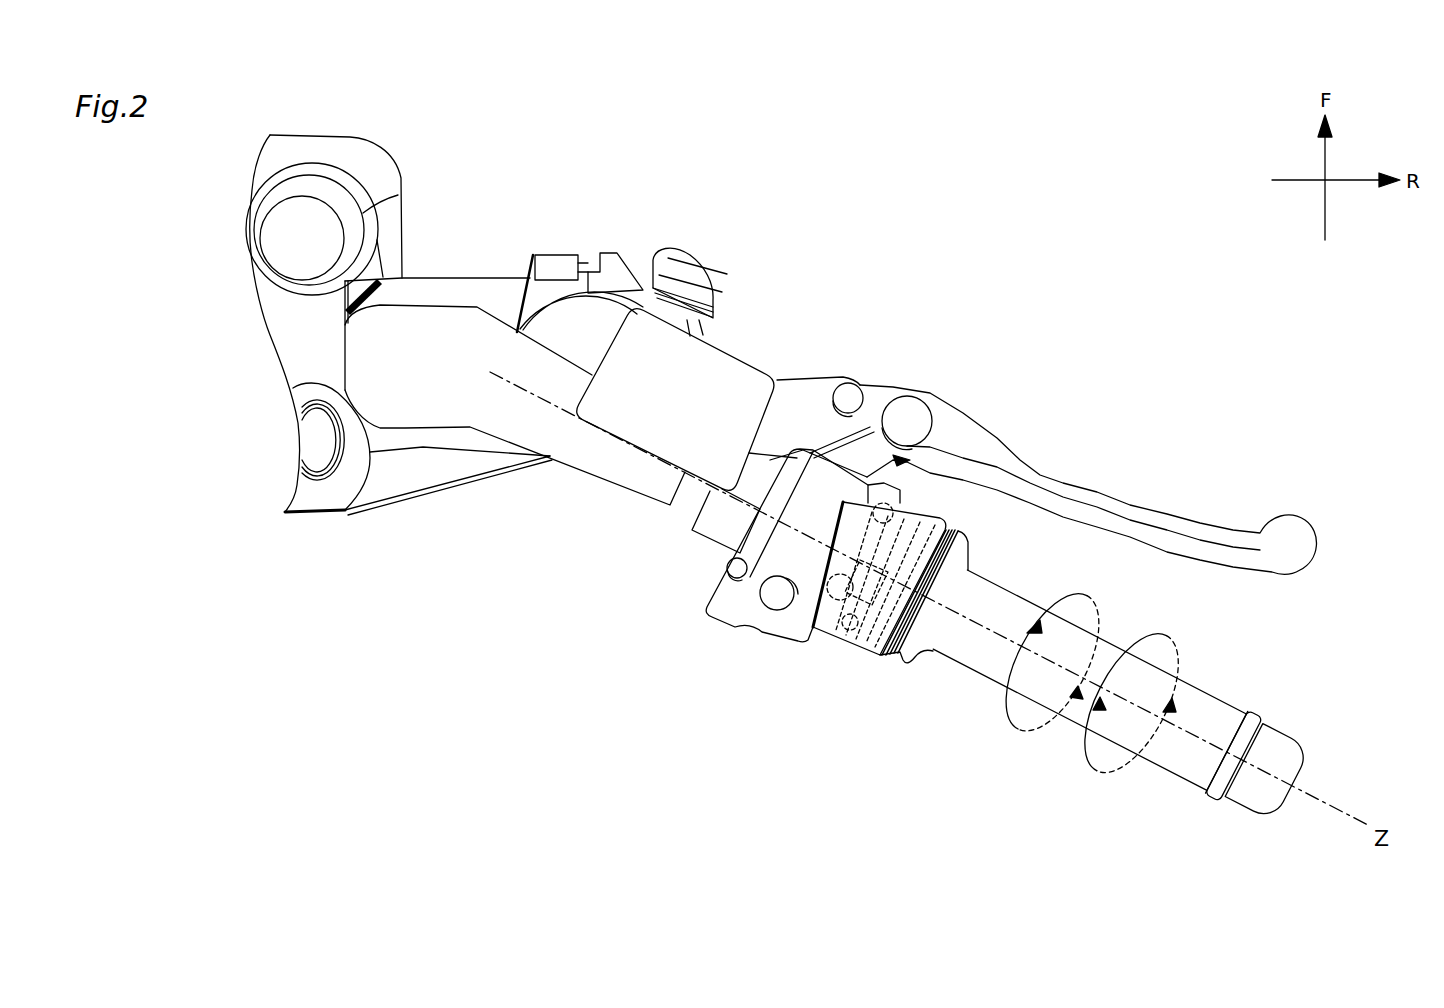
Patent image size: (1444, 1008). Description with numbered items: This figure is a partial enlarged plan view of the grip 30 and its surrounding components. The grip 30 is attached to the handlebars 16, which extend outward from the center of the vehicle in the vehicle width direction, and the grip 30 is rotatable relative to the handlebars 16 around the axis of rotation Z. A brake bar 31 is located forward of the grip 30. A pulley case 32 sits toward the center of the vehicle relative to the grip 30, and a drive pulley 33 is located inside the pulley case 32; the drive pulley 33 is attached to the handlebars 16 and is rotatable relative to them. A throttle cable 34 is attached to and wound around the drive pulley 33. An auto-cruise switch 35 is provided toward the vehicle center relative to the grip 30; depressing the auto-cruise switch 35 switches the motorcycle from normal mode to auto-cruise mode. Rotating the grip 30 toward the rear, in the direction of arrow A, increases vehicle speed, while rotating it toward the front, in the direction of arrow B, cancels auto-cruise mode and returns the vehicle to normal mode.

The handlebars 16 is at (635, 473).
The grip 30 is at (990, 667).
The brake bar 31 is at (1003, 483).
The pulley case 32 is at (903, 498).
The drive pulley 33 is at (866, 622).
The throttle cable 34 is at (858, 615).
The auto-cruise switch 35 is at (778, 580).